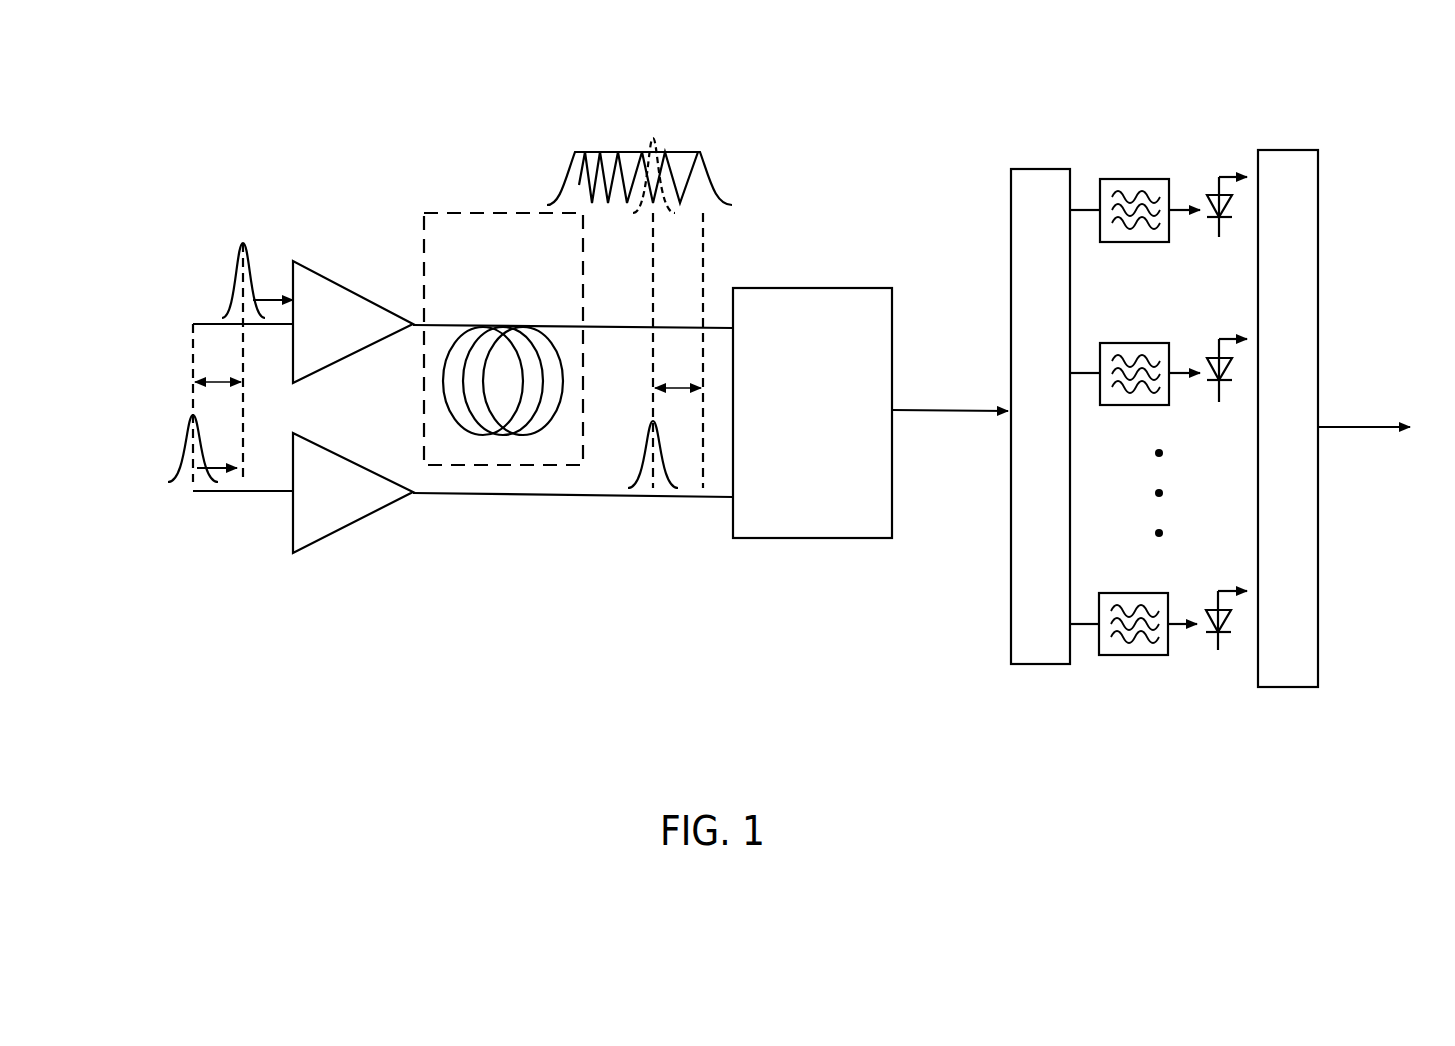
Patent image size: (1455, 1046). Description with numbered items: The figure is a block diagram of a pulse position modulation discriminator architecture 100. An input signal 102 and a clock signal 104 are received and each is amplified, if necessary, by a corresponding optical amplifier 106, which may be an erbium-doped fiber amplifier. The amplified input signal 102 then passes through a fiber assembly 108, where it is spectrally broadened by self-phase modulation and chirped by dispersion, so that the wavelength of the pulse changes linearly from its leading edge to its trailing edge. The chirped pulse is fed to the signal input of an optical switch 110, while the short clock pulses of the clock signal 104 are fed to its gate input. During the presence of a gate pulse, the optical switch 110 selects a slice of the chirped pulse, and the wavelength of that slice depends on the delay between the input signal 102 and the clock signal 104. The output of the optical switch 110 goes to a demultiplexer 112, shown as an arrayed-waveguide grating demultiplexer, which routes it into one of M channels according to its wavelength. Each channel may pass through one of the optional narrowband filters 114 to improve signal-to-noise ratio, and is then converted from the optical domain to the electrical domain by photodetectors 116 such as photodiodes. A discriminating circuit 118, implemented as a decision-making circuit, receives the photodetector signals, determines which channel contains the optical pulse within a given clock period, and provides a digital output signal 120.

The pulse position modulation discriminator architecture 100 is at (527, 637).
The input signal 102 is at (190, 317).
The clock signal 104 is at (190, 495).
The optical amplifiers 106 is at (333, 276).
The fiber assembly 108 is at (462, 213).
The optical switch 110 is at (778, 540).
The demultiplexer 112 is at (1045, 169).
The filters 114 is at (1144, 422).
The photodetectors 116 is at (1219, 177).
The discriminating circuit 118 is at (1300, 149).
The output signal 120 is at (1388, 432).